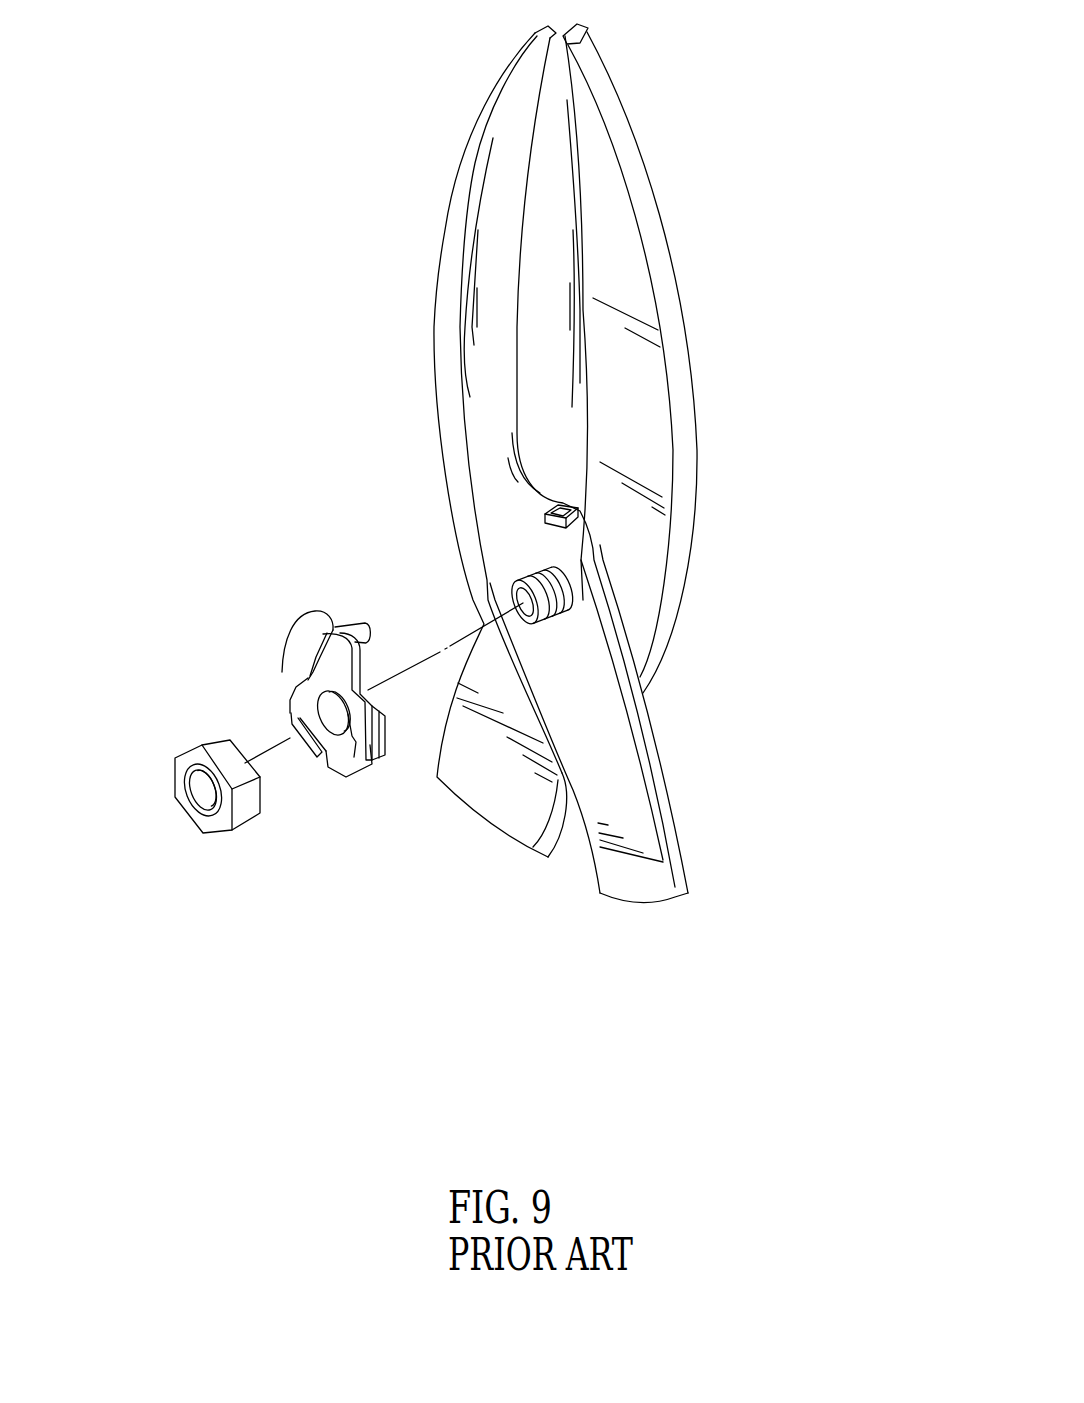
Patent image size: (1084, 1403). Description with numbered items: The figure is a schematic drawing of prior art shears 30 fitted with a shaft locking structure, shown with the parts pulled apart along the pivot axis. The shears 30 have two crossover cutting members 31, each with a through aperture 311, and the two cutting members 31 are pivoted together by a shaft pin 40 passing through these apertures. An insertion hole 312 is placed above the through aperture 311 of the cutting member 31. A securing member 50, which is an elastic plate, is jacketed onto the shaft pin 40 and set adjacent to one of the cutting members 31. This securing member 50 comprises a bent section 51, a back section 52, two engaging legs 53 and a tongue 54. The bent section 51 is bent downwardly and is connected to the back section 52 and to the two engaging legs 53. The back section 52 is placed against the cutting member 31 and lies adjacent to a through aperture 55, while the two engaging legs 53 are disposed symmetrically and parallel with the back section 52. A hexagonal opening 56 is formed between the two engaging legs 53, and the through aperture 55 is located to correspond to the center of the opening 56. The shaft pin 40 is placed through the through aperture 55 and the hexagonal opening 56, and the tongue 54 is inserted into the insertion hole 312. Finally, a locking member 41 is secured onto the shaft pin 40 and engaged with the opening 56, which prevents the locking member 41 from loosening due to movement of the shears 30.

The shears 30 is at (617, 459).
The cutting member 31 is at (640, 363).
The through aperture 311 is at (570, 593).
The insertion hole 312 is at (543, 514).
The shaft pin 40 is at (508, 580).
The locking member 41 is at (215, 825).
The securing member 50 is at (316, 693).
The bent section 51 is at (315, 612).
The back section 52 is at (323, 767).
The engaging leg 53 is at (280, 677).
The tongue 54 is at (360, 632).
The through aperture 55 is at (330, 706).
The hexagonal opening 56 is at (307, 722).